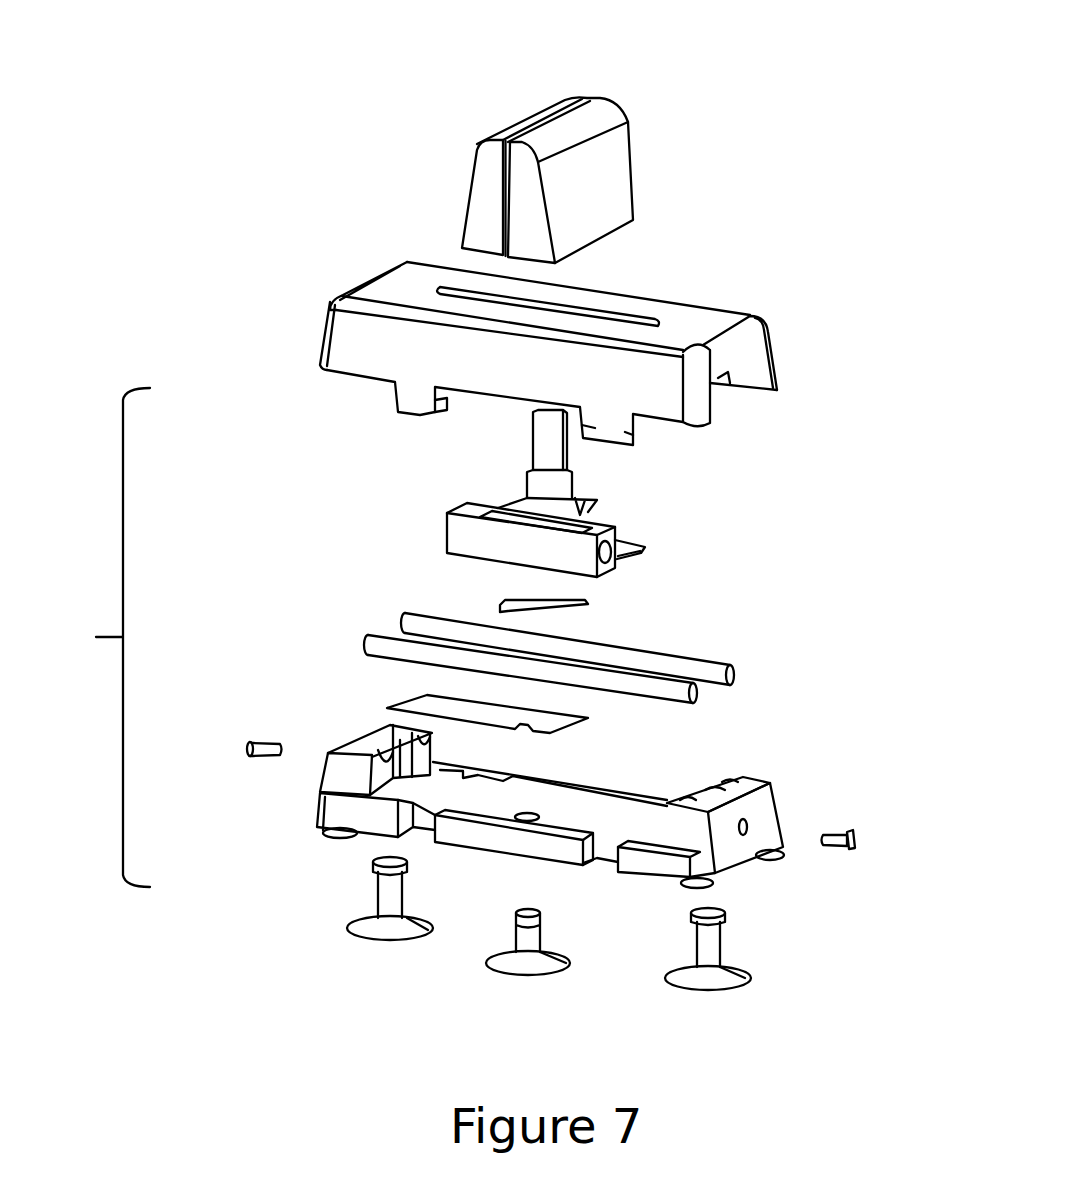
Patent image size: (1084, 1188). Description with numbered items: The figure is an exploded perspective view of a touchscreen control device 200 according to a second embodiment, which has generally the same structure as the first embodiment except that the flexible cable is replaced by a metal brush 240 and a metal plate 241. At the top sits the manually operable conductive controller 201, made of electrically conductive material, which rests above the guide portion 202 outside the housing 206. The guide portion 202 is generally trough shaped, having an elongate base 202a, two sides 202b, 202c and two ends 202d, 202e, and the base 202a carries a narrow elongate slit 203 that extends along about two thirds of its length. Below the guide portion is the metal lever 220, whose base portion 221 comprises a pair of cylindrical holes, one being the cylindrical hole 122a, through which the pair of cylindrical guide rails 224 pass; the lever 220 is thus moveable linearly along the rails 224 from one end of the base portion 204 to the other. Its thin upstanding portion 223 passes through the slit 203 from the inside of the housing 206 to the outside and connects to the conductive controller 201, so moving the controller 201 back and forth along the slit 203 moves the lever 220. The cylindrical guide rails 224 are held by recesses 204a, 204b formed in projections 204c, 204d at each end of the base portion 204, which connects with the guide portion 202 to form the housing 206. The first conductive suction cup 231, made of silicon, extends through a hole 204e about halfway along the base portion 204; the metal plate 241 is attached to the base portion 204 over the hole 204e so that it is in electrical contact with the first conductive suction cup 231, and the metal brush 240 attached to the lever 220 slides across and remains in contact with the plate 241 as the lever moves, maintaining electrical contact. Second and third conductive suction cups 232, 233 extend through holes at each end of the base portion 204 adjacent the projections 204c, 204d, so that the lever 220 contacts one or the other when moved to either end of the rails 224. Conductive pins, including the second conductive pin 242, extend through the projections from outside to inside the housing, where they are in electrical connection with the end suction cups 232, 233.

The touchscreen control device 200 is at (838, 97).
The manually operable conductive controller 201 is at (592, 173).
The guide portion 202 is at (783, 318).
The base of guide portion 202a is at (403, 295).
The side of guide portion 202b is at (377, 353).
The side of guide portion 202c is at (749, 387).
The end of guide portion 202d is at (327, 320).
The end of guide portion 202e is at (760, 352).
The elongate slit 203 is at (635, 308).
The metal lever 220 is at (636, 518).
The base portion of metal lever 221 is at (490, 542).
The upstanding portion 223 is at (545, 452).
The metal brush 240 is at (500, 606).
The cylindrical guide rails 224 is at (700, 697).
The cylindrical hole 122a is at (613, 678).
The metal plate 241 is at (403, 700).
The base portion 204 is at (773, 770).
The recess 204a is at (384, 760).
The recess 204b is at (695, 805).
The projection 204c is at (353, 777).
The projection 204d is at (767, 825).
The hole 204e is at (523, 821).
The second conductive pin 242 is at (862, 836).
The first conductive suction cup 231 is at (525, 933).
The second conductive suction cup 232 is at (393, 862).
The third conductive suction cup 233 is at (718, 947).
The housing 206 is at (97, 637).